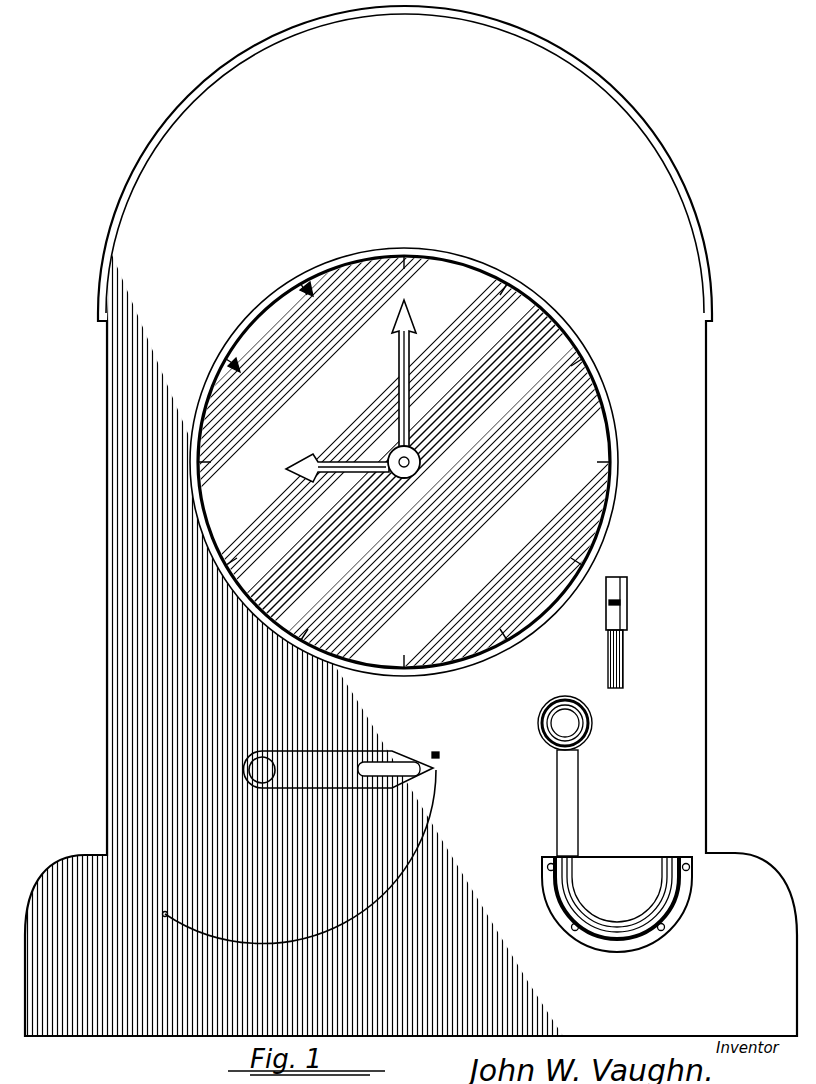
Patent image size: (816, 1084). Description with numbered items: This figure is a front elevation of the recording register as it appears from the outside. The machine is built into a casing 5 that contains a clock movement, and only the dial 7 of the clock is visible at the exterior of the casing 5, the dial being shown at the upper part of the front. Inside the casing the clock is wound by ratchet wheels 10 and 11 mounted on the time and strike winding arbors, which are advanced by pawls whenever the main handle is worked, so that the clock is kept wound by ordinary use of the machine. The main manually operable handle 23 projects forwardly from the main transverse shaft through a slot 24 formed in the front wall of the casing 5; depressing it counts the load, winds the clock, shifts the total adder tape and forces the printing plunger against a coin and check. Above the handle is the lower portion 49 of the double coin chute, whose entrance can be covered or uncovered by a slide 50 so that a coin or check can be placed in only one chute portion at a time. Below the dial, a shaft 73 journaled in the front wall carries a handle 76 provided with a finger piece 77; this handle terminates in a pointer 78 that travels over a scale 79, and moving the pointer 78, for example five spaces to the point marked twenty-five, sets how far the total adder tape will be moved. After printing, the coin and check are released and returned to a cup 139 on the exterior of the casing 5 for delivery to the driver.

The casing 5 is at (512, 141).
The dial 7 is at (408, 542).
The ratchet wheel 10 is at (244, 370).
The ratchet wheel 11 is at (312, 298).
The main manually operable handle 23 is at (592, 723).
The slot 24 is at (578, 818).
The lower portion of coin chute 49 is at (623, 664).
The slide 50 is at (627, 597).
The shaft 73 is at (275, 770).
The handle 76 is at (338, 767).
The finger piece 77 is at (396, 764).
The pointer 78 is at (440, 757).
The scale 79 is at (445, 798).
The cup 139 is at (636, 894).